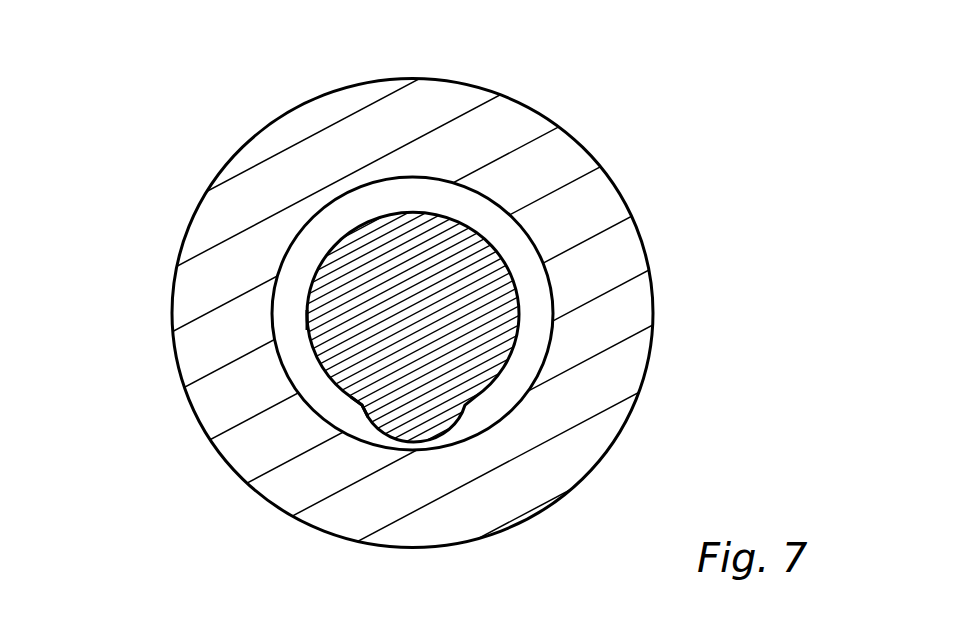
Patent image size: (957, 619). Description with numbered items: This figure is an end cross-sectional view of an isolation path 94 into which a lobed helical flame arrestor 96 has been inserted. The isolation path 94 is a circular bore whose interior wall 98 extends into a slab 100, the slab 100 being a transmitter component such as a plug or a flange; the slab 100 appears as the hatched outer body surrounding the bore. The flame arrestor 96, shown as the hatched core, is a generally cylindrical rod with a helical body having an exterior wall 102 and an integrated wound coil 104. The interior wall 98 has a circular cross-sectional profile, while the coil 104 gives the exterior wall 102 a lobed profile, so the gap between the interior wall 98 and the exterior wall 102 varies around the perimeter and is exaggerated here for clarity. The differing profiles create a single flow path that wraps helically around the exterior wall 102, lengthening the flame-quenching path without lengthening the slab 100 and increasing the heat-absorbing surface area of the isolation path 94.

The isolation path 94 is at (555, 328).
The helical flame arrestor 96 is at (409, 210).
The interior wall 98 is at (530, 227).
The slab 100 is at (616, 437).
The exterior wall 102 is at (310, 322).
The coil 104 is at (370, 420).